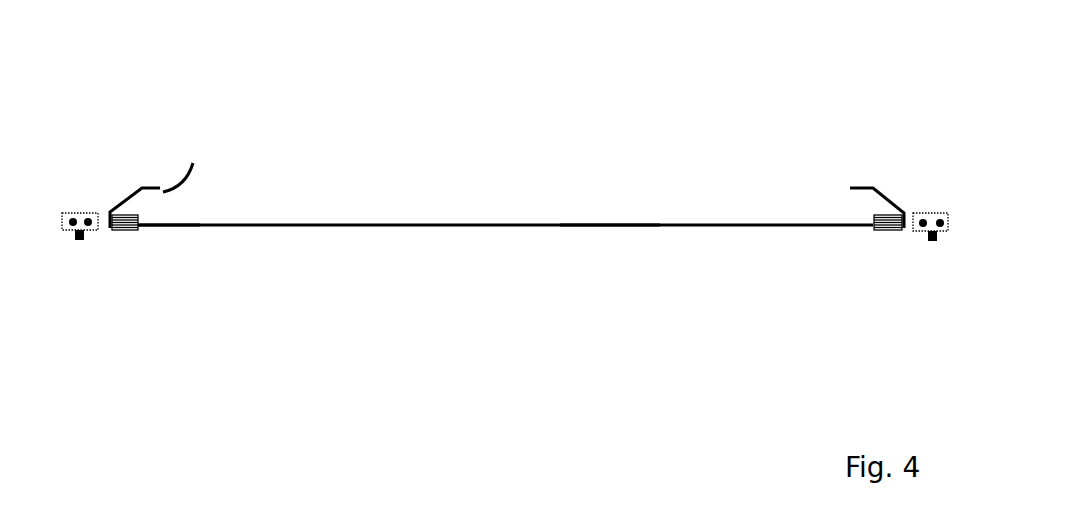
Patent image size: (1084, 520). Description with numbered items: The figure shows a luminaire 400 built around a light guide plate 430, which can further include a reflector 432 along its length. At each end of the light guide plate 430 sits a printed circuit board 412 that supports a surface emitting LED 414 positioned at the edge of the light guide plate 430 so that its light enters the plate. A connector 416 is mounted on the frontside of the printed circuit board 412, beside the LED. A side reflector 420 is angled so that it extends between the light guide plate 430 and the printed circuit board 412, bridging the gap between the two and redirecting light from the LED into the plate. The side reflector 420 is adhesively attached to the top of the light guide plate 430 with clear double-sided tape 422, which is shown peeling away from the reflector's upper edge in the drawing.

The luminaire 400 is at (234, 82).
The printed circuit board 412 is at (160, 246).
The surface emitting LED 414 is at (124, 229).
The connector 416 is at (72, 202).
The side reflector 420 is at (123, 183).
The clear double-sided tape 422 is at (198, 162).
The light guide plate 430 is at (505, 209).
The reflector 432 is at (614, 239).